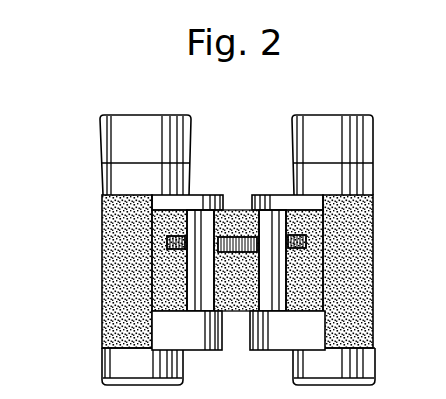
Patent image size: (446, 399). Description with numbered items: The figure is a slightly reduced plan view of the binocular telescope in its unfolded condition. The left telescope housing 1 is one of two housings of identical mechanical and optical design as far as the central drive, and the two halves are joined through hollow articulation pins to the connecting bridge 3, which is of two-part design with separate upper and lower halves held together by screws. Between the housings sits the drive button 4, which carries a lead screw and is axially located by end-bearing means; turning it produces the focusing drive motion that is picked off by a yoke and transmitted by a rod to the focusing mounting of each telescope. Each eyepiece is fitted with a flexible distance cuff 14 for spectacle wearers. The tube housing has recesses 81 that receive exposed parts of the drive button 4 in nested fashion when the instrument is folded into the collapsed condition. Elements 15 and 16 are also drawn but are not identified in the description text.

The telescope housing 1 is at (102, 300).
The flexible distance cuff 14 is at (101, 150).
The upper bridge bar 15 is at (203, 196).
The recesses in the tube housing 81 is at (290, 208).
The drive button 4 is at (232, 240).
The connecting bridge 3 is at (240, 312).
The lower bridge block 16 is at (192, 340).